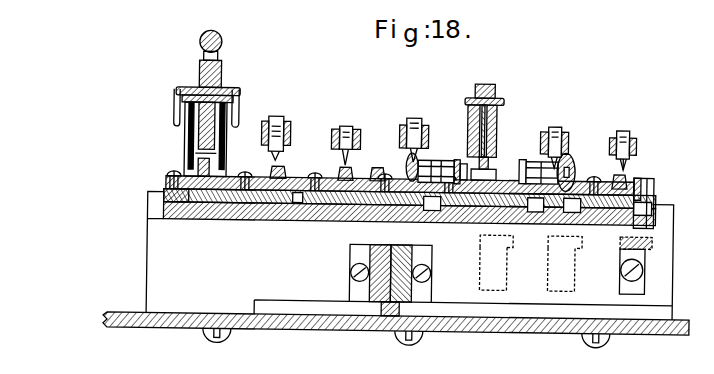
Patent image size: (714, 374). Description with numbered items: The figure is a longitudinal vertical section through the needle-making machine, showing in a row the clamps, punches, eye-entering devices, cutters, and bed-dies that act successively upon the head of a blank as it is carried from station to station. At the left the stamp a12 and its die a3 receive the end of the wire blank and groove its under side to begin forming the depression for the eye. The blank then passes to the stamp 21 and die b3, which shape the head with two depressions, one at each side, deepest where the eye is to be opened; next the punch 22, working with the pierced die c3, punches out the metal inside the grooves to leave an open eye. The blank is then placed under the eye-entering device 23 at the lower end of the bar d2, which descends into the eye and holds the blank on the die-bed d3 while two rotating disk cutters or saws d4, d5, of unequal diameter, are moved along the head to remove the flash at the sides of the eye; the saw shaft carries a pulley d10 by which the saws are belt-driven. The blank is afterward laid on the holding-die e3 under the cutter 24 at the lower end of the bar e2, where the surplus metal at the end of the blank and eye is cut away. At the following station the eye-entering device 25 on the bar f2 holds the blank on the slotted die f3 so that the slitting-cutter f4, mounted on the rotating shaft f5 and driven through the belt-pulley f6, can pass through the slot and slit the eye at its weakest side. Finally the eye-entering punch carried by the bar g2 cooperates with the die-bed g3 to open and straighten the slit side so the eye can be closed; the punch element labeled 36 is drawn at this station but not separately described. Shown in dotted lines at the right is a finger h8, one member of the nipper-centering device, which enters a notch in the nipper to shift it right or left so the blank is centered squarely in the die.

The stamp a12 is at (184, 150).
The die a3 is at (186, 166).
The stamp 21 is at (266, 156).
The die b3 is at (280, 174).
The punch 22 is at (338, 155).
The die c3 is at (341, 173).
The bar d2 is at (410, 127).
The die-bed d3 is at (406, 171).
The rotating disk cutter d4 is at (406, 164).
The rotating disk cutter d5 is at (440, 158).
The eye-entering device 23 is at (424, 153).
The pulley d10 is at (460, 162).
The bar e2 is at (484, 85).
The cutter 24 is at (488, 166).
The belt-pulley f6 is at (525, 165).
The eye-entering device 25 is at (549, 159).
The bar f2 is at (553, 124).
The slitting-cutter f4 is at (569, 158).
The rotating shaft f5 is at (569, 168).
The bar g2 is at (628, 130).
The needle 36 is at (626, 162).
The die-bed g3 is at (612, 176).
The finger h8 is at (690, 228).
The holding-die e3 is at (486, 235).
The die f3 is at (552, 235).